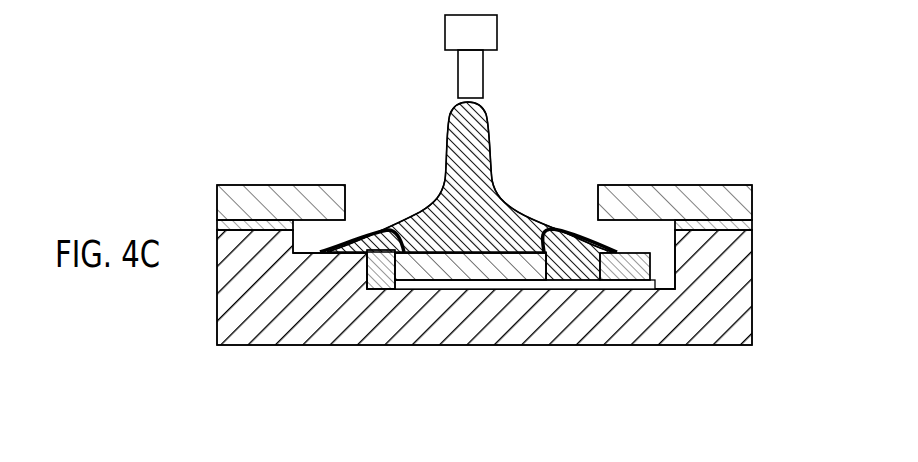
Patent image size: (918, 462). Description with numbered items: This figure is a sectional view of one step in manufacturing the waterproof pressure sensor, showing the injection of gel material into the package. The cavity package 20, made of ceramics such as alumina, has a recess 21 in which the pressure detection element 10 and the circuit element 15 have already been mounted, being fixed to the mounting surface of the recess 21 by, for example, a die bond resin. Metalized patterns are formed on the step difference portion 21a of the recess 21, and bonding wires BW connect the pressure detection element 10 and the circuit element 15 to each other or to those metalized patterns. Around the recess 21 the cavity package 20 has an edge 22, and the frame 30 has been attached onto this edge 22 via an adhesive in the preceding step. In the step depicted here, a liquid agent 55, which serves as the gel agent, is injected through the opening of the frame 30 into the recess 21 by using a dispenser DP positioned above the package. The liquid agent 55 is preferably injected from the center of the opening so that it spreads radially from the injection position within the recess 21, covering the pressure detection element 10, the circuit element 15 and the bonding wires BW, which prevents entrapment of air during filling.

The pressure detection element 10 is at (629, 284).
The circuit element 15 is at (462, 266).
The cavity package 20 is at (736, 310).
The recess 21 is at (667, 287).
The step difference portion 21a is at (308, 254).
The edge 22 is at (738, 226).
The frame 30 is at (736, 198).
The liquid agent 55 is at (481, 162).
The bonding wire BW is at (385, 225).
The dispenser DP is at (485, 33).